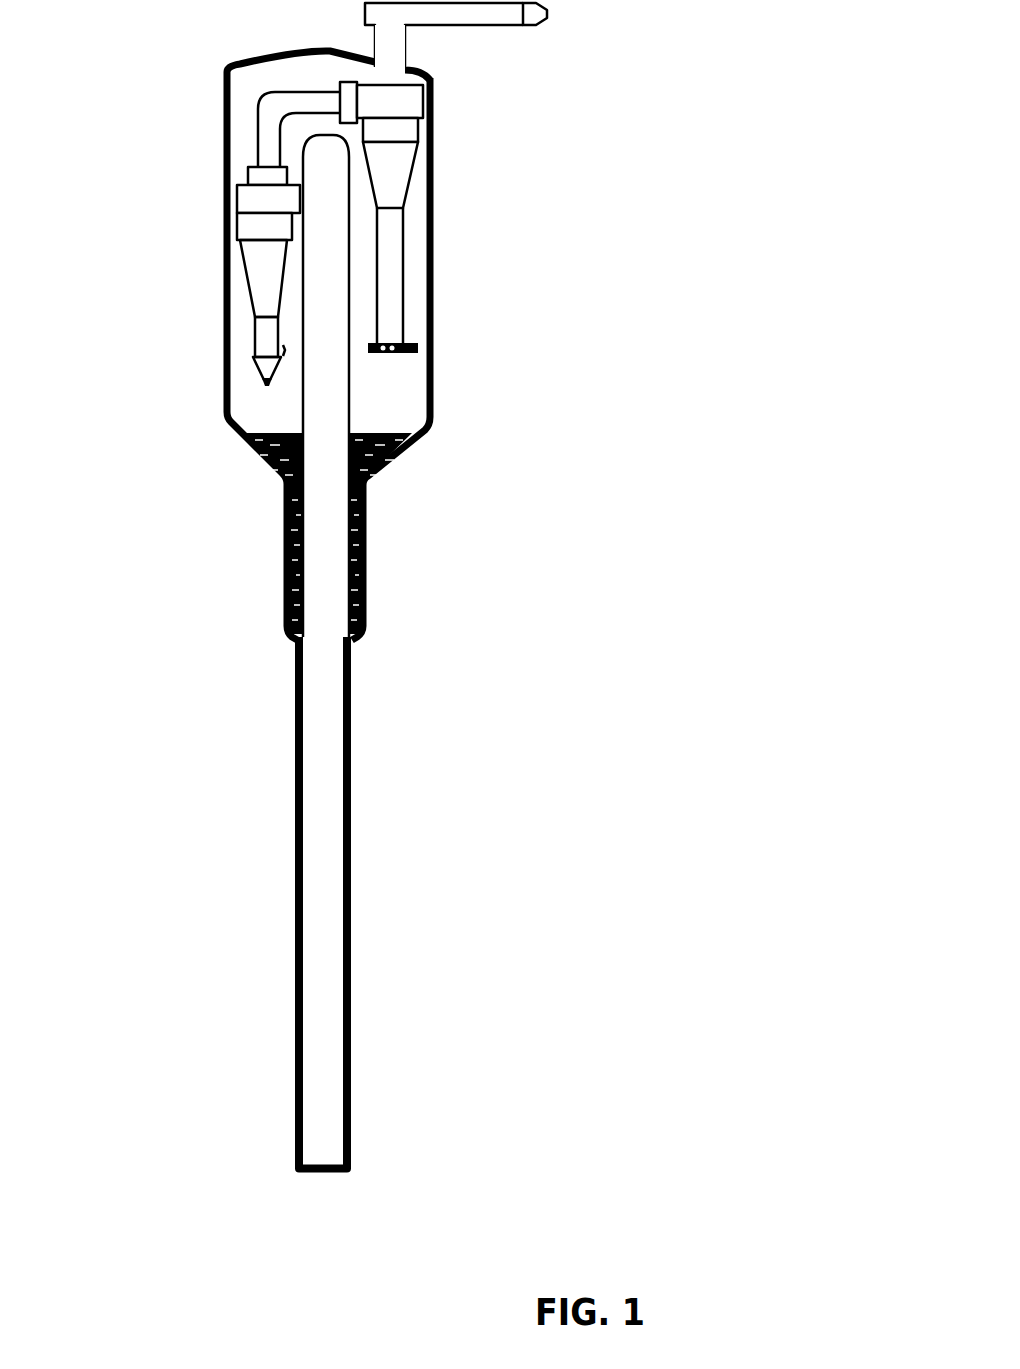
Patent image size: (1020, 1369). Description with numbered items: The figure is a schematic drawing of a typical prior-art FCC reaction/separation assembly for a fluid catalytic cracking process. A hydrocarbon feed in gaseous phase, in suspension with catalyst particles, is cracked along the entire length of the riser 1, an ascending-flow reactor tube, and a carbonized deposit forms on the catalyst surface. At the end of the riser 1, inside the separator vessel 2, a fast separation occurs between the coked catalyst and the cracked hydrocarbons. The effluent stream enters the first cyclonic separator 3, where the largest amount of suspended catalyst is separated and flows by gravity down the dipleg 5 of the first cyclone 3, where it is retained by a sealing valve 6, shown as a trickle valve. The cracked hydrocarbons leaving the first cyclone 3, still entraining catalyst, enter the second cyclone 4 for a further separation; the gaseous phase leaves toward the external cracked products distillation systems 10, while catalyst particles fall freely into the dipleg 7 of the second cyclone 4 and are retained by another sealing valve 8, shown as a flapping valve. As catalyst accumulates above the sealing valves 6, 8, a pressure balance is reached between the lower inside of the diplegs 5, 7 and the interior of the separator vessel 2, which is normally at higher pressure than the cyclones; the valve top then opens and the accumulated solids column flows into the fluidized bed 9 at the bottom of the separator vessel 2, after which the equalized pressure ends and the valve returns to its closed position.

The riser 1 is at (322, 1133).
The separator vessel 2 is at (224, 269).
The first cyclonic separator 3 is at (253, 200).
The second cyclone 4 is at (395, 104).
The dipleg 5 is at (262, 338).
The sealing valve 6 is at (262, 383).
The dipleg 7 is at (387, 254).
The sealing valve 8 is at (418, 352).
The fluidized bed 9 is at (382, 463).
The external cracked products distillation systems 10 is at (505, 15).